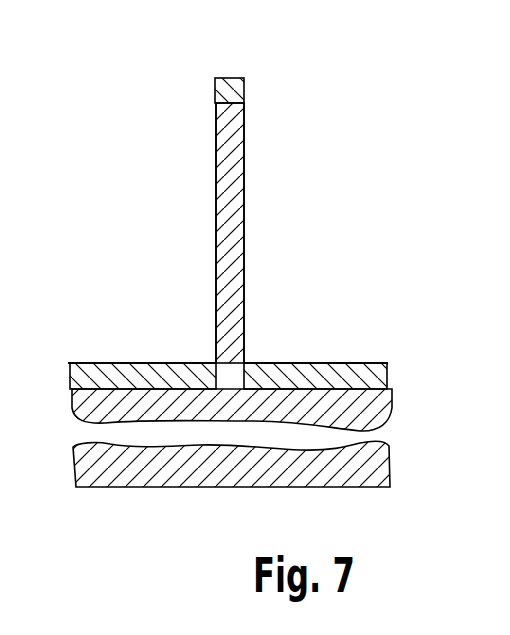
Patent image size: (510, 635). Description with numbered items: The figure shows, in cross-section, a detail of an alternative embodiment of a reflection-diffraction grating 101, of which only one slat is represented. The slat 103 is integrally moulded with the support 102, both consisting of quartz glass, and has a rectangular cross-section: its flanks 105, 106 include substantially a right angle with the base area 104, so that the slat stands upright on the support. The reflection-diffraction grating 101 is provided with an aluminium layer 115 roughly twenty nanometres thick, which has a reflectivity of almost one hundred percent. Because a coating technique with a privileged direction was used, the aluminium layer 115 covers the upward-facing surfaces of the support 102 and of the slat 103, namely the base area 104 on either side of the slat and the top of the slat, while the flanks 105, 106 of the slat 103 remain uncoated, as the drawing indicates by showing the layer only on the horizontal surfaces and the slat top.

The reflection-diffraction grating 101 is at (311, 139).
The support 102 is at (160, 452).
The slat 103 is at (231, 157).
The base area 104 is at (137, 389).
The flank 105 is at (216, 160).
The flank 106 is at (244, 220).
The aluminium layer 115 is at (219, 88).